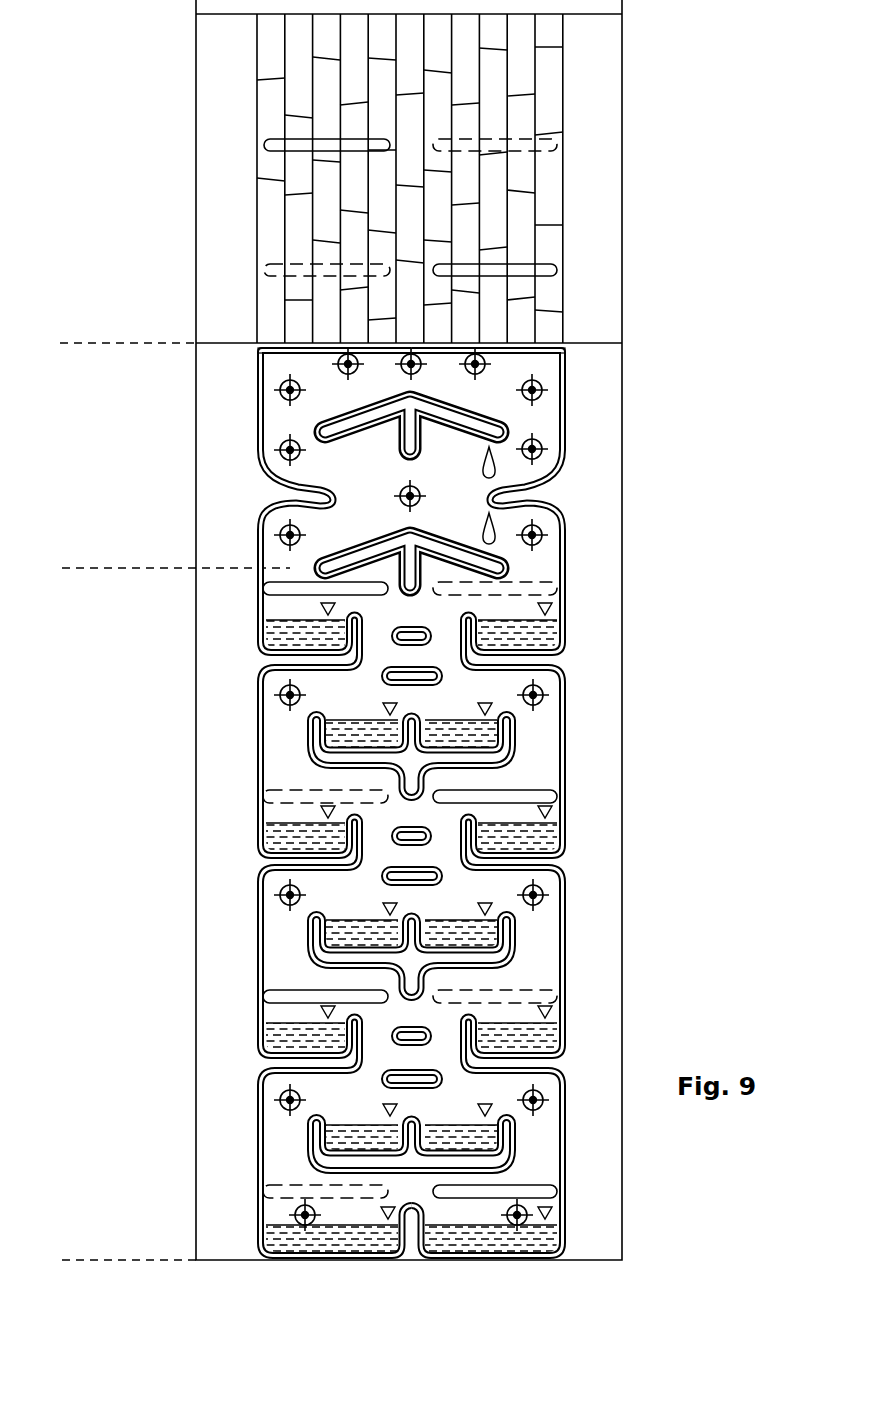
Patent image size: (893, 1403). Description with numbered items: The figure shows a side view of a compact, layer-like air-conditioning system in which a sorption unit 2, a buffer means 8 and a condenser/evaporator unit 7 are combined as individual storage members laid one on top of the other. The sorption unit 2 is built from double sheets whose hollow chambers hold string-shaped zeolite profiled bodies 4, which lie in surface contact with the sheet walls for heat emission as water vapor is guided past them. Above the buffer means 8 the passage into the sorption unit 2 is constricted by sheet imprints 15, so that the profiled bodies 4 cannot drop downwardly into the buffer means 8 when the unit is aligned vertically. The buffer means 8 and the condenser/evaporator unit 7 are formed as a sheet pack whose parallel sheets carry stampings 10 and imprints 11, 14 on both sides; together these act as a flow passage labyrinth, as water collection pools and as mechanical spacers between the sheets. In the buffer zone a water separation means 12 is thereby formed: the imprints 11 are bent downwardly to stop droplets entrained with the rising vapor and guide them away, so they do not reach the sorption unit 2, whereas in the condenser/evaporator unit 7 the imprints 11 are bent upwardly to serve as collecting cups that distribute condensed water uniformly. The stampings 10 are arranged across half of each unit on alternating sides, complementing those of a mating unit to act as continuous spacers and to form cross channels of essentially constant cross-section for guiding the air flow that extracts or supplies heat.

The sorption unit 2 is at (622, 254).
The zeolite profiled body 4 is at (268, 213).
The condenser/evaporator unit 7 is at (105, 1260).
The buffer means 8 is at (105, 344).
The stamping 10 is at (552, 137).
The imprint 11 is at (265, 857).
The water separation means 12 is at (245, 663).
The imprint 14 is at (522, 78).
The sheet imprint 15 is at (560, 340).